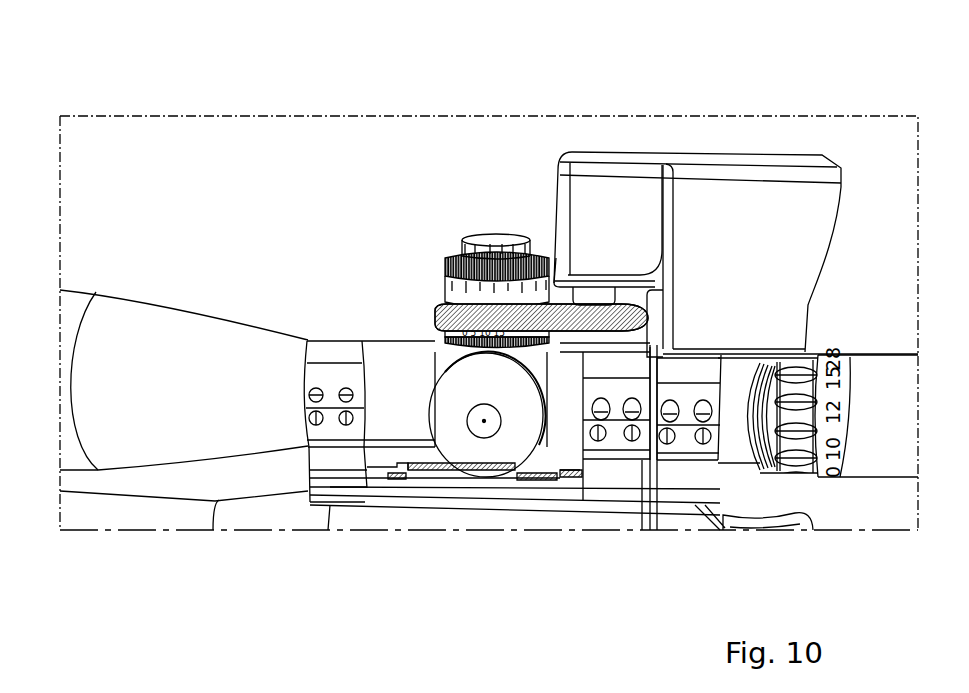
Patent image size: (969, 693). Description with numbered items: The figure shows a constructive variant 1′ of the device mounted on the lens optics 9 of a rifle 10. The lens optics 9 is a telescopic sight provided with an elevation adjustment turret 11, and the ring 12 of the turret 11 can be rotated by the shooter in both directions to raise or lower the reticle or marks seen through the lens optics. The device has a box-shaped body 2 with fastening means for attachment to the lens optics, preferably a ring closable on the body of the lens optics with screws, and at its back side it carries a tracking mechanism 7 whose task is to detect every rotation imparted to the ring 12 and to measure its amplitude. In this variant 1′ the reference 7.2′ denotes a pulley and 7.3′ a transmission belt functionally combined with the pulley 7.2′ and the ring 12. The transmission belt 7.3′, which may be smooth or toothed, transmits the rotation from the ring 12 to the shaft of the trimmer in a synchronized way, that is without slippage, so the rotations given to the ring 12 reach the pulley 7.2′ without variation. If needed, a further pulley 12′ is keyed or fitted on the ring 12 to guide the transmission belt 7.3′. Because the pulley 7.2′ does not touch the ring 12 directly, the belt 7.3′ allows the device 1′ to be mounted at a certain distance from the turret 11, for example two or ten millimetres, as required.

The constructive variant of the device 1′ is at (753, 153).
The box-shaped body 2 is at (687, 455).
The tracking mechanism 7 is at (596, 333).
The pulley 7.2′ is at (590, 291).
The transmission belt 7.3′ is at (557, 334).
The lens optics 9 is at (145, 301).
The rifle 10 is at (192, 519).
The elevation adjustment turret 11 is at (475, 236).
The ring of the turret 12 is at (447, 268).
The further pulley 12′ is at (555, 257).